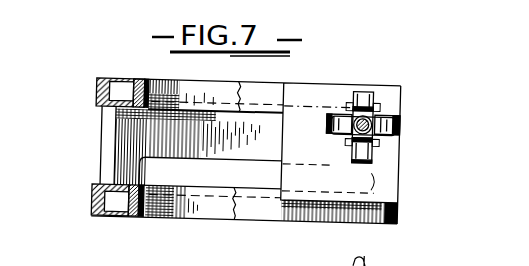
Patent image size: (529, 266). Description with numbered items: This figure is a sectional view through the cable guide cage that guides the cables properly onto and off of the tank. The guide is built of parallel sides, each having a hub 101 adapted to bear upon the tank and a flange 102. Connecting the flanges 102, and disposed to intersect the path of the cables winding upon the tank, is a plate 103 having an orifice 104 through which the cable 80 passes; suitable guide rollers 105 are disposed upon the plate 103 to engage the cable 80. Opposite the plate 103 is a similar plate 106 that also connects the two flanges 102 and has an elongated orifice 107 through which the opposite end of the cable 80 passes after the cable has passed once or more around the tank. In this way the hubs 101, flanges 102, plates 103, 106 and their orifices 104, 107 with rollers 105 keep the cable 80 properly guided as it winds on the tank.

The cable 80 is at (363, 109).
The hub 101 is at (136, 81).
The flange 102 is at (96, 81).
The plate 103 is at (388, 154).
The orifice 104 is at (366, 115).
The guide rollers 105 is at (363, 142).
The plate 106 is at (150, 140).
The elongated orifice 107 is at (228, 168).